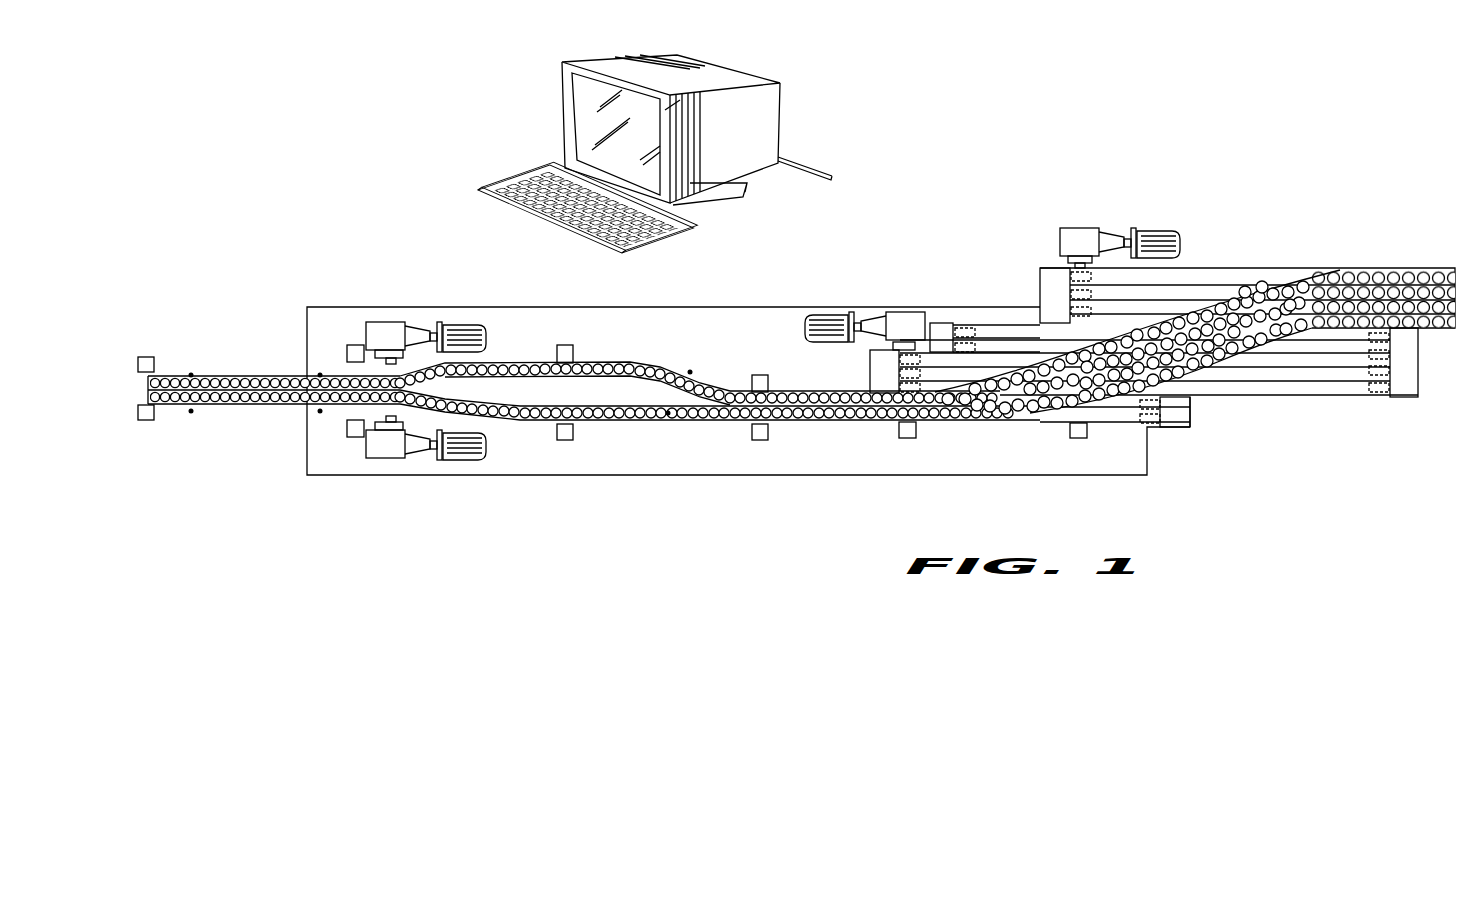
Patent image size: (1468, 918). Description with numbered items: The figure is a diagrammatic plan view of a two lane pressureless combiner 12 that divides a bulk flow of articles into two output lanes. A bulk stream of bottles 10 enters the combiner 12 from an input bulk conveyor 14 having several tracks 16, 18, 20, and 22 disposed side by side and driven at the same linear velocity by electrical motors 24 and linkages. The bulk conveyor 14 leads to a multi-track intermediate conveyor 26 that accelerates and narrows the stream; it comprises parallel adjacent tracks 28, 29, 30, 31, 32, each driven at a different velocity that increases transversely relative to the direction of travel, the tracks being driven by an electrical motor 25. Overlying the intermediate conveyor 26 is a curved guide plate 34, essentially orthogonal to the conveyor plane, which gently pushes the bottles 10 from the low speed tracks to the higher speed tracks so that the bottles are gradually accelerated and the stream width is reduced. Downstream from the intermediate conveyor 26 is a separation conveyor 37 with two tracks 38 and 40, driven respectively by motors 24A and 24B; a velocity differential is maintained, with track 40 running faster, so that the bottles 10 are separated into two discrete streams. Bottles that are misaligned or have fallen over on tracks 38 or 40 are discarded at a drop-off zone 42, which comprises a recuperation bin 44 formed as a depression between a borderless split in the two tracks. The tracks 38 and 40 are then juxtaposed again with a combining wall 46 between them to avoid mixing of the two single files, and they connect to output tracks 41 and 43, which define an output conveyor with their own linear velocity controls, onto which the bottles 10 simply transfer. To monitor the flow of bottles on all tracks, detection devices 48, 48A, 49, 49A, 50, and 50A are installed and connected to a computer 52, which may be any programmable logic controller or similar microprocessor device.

The bottles 10 is at (1289, 300).
The two lane pressureless combiner 12 is at (404, 212).
The input bulk conveyor 14 is at (1447, 258).
The track 16 is at (1326, 277).
The track 18 is at (1352, 285).
The track 20 is at (1428, 292).
The track 22 is at (1402, 323).
The electrical motors 24 is at (1067, 230).
The motor 24A is at (457, 333).
The motor 24B is at (456, 449).
The electrical motor 25 is at (825, 316).
The multi-track intermediate conveyor 26 is at (948, 348).
The track 28 is at (984, 330).
The track 29 is at (1010, 345).
The track 30 is at (970, 360).
The track 31 is at (943, 372).
The track 32 is at (934, 385).
The curved guide plate 34 is at (1142, 322).
The separation conveyor 37 is at (1108, 428).
The track 38 is at (793, 392).
The track 40 is at (778, 414).
The output track 41 is at (162, 373).
The drop-off zone 42 is at (603, 393).
The output track 43 is at (162, 408).
The recuperation bin 44 is at (722, 327).
The combining wall 46 is at (234, 364).
The detection device 48 is at (690, 370).
The detection device 48A is at (668, 418).
The detection device 49 is at (320, 372).
The detection device 49A is at (320, 414).
The detection device 50 is at (191, 372).
The detection device 50A is at (191, 414).
The computer 52 is at (576, 118).